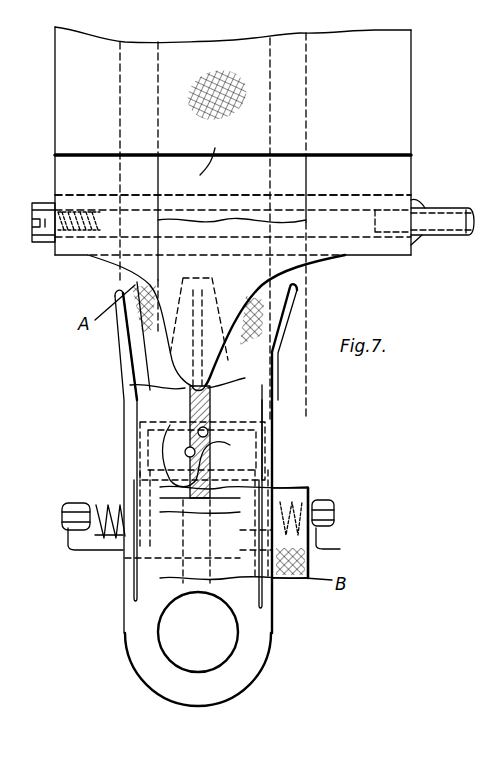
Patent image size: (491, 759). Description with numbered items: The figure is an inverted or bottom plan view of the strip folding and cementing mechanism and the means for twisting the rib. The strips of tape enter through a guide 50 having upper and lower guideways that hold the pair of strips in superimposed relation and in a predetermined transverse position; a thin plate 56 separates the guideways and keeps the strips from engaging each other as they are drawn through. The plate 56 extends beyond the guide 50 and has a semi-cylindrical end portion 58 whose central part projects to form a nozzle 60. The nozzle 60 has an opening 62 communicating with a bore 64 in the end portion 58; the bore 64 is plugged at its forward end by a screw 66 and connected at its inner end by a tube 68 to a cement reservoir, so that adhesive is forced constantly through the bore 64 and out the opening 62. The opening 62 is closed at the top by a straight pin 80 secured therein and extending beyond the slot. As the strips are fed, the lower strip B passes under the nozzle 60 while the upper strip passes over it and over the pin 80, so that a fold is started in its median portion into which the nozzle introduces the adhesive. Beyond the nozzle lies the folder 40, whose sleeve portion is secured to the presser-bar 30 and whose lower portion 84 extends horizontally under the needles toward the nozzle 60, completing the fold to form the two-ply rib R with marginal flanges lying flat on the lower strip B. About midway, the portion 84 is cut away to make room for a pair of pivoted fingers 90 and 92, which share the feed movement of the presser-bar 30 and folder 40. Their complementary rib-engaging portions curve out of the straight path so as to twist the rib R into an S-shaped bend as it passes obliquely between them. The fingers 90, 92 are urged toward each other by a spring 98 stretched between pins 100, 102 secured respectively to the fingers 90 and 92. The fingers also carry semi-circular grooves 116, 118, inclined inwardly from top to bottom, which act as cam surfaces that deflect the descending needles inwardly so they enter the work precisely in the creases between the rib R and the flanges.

The guide 50 is at (398, 60).
The plate 56 is at (398, 172).
The bore 64 is at (330, 210).
The screw 66 is at (40, 203).
The semi-cylindrical end portion 58 is at (416, 206).
The tube 68 is at (455, 222).
The opening 62 is at (214, 276).
The pin 80 is at (190, 388).
The nozzle 60 is at (264, 369).
The lower portion 84 is at (262, 382).
The rib R is at (226, 470).
The semi-circular groove 118 is at (210, 432).
The semi-circular groove 116 is at (184, 450).
The finger 90 is at (175, 462).
The finger 92 is at (235, 442).
The spring 98 is at (95, 505).
The pin 100 is at (80, 544).
The pin 102 is at (348, 536).
The folder 40 is at (148, 672).
The presser-bar 30 is at (168, 640).
The lower strip B is at (210, 150).